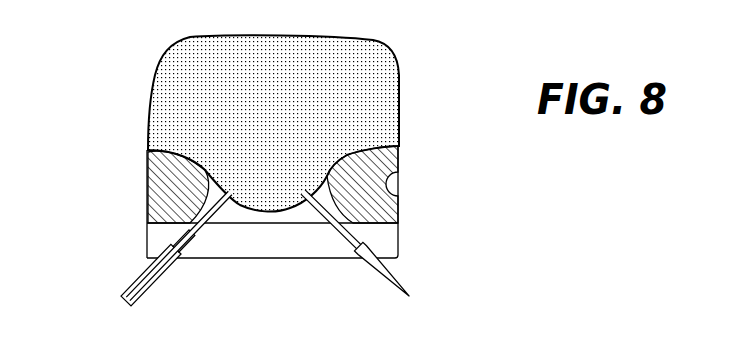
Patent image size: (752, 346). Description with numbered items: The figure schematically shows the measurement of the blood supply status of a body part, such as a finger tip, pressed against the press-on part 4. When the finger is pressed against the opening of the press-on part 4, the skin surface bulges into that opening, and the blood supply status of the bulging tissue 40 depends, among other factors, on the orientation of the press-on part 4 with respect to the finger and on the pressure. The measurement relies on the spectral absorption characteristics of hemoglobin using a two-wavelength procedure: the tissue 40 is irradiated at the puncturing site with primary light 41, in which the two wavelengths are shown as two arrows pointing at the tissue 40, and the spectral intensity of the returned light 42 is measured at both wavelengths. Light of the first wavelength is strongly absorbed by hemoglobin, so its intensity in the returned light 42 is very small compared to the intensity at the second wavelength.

The press-on part 4 is at (148, 179).
The tissue 40 is at (267, 213).
The primary light 41 is at (147, 248).
The returned light 42 is at (396, 277).